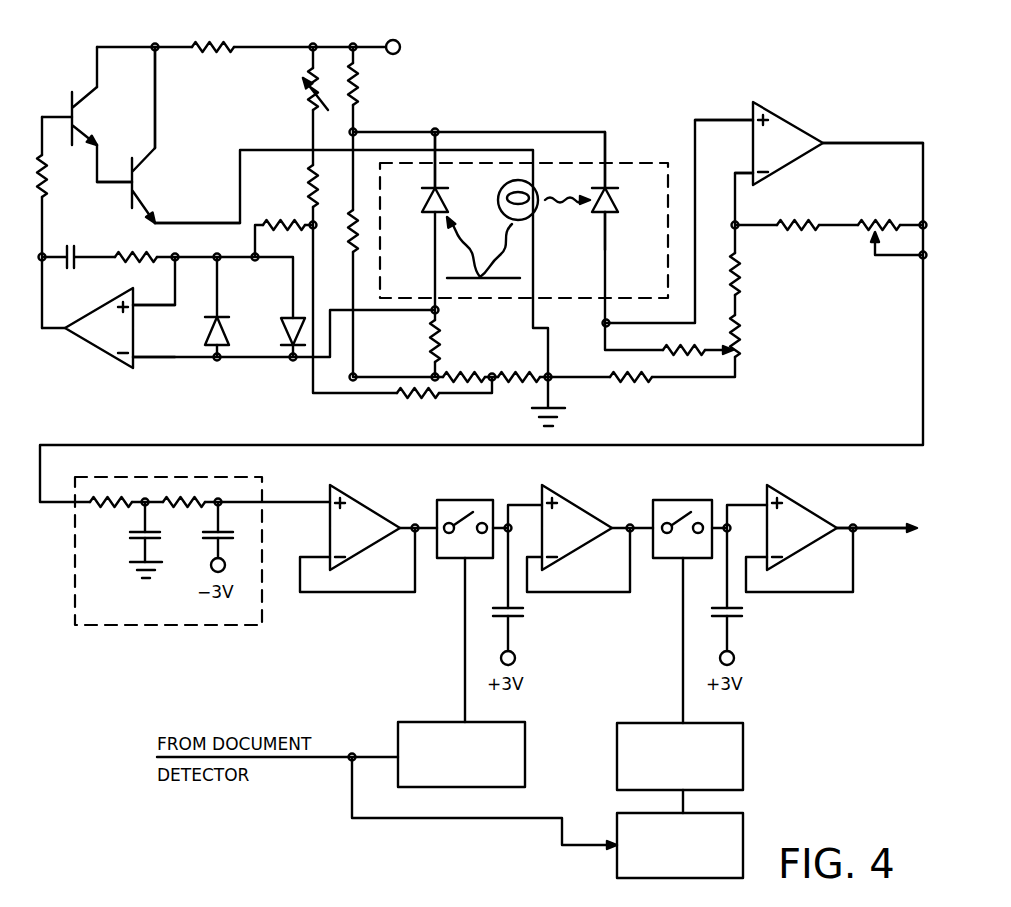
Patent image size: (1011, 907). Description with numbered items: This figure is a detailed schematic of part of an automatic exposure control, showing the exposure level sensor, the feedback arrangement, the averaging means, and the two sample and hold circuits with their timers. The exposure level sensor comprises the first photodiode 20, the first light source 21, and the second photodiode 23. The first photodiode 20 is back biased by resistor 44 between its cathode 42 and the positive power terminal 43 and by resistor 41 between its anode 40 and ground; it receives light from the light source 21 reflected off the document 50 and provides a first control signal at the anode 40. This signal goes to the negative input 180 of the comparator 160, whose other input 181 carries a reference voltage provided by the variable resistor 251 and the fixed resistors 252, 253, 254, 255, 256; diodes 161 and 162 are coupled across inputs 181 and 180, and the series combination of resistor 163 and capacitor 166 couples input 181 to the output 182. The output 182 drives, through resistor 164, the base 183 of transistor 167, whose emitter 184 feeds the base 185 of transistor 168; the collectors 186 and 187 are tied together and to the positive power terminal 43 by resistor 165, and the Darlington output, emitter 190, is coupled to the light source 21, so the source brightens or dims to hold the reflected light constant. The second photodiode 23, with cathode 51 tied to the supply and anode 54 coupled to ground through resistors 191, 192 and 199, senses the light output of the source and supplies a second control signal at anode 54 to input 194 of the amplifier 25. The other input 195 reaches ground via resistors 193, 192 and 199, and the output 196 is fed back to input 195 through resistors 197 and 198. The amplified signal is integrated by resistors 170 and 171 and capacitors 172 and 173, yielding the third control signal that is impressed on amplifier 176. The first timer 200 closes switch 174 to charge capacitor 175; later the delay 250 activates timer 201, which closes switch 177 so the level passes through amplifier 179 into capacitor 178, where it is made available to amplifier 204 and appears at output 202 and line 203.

The base 183 is at (72, 110).
The collector 186 is at (97, 56).
The transistor 167 is at (80, 117).
The emitter 184 is at (96, 140).
The base 185 is at (124, 200).
The collector 187 is at (157, 151).
The transistor 168 is at (142, 184).
The emitter 190 is at (158, 212).
The resistor 164 is at (49, 175).
The resistor 165 is at (224, 40).
The resistor 163 is at (136, 248).
The capacitor 166 is at (76, 264).
The comparator 160 is at (104, 352).
The input 181 is at (135, 306).
The negative input 180 is at (136, 360).
The output 182 is at (66, 331).
The diode 161 is at (233, 330).
The diode 162 is at (282, 322).
The variable resistor 251 is at (290, 86).
The fixed resistor 252 is at (308, 186).
The fixed resistor 253 is at (296, 220).
The positive power terminal 43 is at (386, 42).
The resistor 44 is at (359, 86).
The anode 40 is at (428, 220).
The first photodiode 20 is at (444, 200).
The cathode 42 is at (444, 187).
The first light source 21 is at (539, 222).
The document 50 is at (497, 278).
The second photodiode 23 is at (614, 200).
The cathode 51 is at (614, 180).
The anode 54 is at (614, 215).
The resistor 41 is at (444, 340).
The fixed resistor 256 is at (469, 366).
The fixed resistor 255 is at (410, 400).
The fixed resistor 254 is at (522, 385).
The resistor 199 is at (634, 385).
The resistor 191 is at (676, 352).
The resistor 192 is at (744, 350).
The resistor 193 is at (744, 275).
The amplifier 25 is at (783, 125).
The input 194 is at (752, 116).
The input 195 is at (752, 170).
The output 196 is at (826, 136).
The resistor 198 is at (784, 219).
The resistor 197 is at (896, 224).
The resistor 170 is at (108, 491).
The resistor 171 is at (196, 491).
The capacitor 172 is at (134, 529).
The capacitor 173 is at (212, 529).
The amplifier 176 is at (364, 510).
The switch 174 is at (460, 510).
The amplifier 179 is at (578, 510).
The capacitor 175 is at (518, 618).
The switch 177 is at (681, 510).
The capacitor 178 is at (735, 618).
The amplifier 204 is at (800, 512).
The output 202 is at (840, 526).
The line 203 is at (870, 535).
The first timer 200 is at (510, 740).
The timer 201 is at (730, 740).
The delay 250 is at (735, 835).